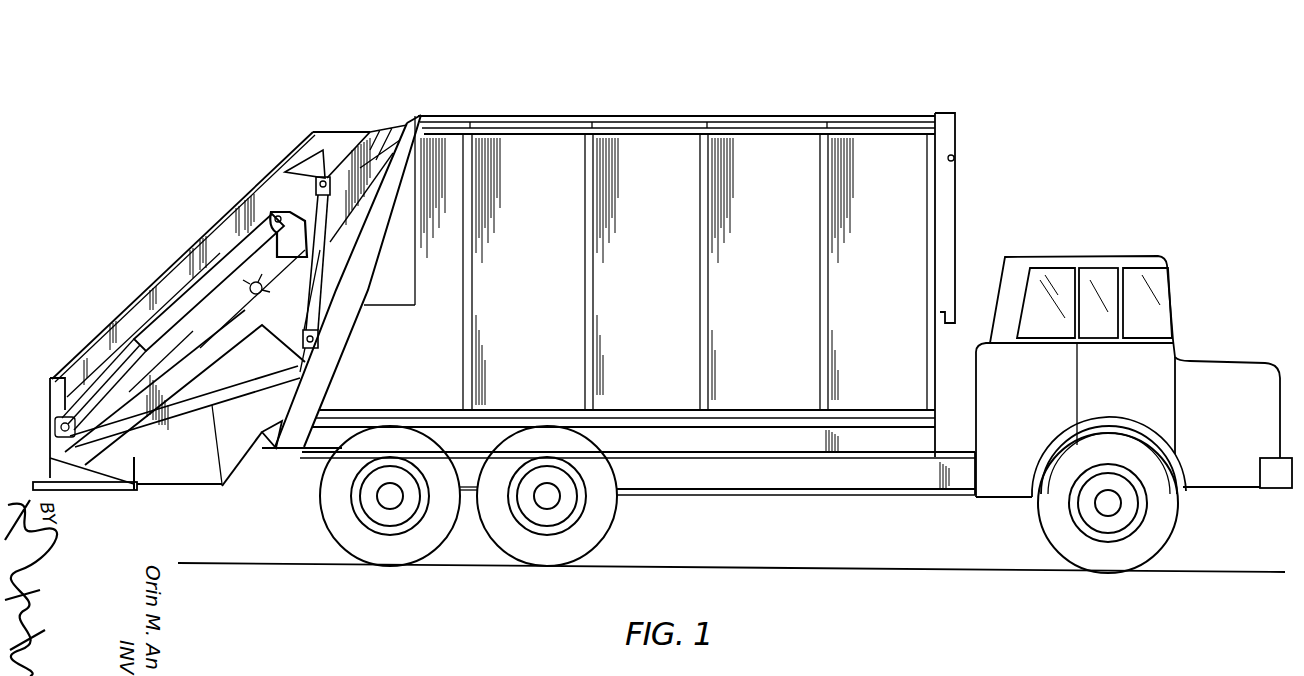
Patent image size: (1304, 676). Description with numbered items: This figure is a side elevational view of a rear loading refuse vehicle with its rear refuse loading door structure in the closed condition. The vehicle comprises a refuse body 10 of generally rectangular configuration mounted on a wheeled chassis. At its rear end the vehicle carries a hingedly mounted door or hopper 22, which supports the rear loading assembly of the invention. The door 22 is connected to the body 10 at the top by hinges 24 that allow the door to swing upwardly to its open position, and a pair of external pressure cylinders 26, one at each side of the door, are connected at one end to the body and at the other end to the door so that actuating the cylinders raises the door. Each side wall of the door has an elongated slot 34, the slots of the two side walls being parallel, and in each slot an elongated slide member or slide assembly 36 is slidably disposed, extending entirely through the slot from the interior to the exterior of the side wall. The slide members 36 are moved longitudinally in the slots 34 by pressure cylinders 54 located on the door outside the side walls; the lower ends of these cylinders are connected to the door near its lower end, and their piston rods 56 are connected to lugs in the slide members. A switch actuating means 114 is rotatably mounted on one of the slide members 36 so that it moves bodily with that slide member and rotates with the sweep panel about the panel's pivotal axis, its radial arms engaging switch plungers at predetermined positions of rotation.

The refuse body 10 is at (643, 113).
The door 22 is at (222, 214).
The hinges 24 is at (406, 124).
The pressure cylinders 26 is at (312, 287).
The elongated slot 34 is at (213, 272).
The slide member 36 is at (349, 186).
The pressure cylinders 54 is at (143, 345).
The piston rods 56 is at (259, 232).
The switch actuating means 114 is at (254, 333).